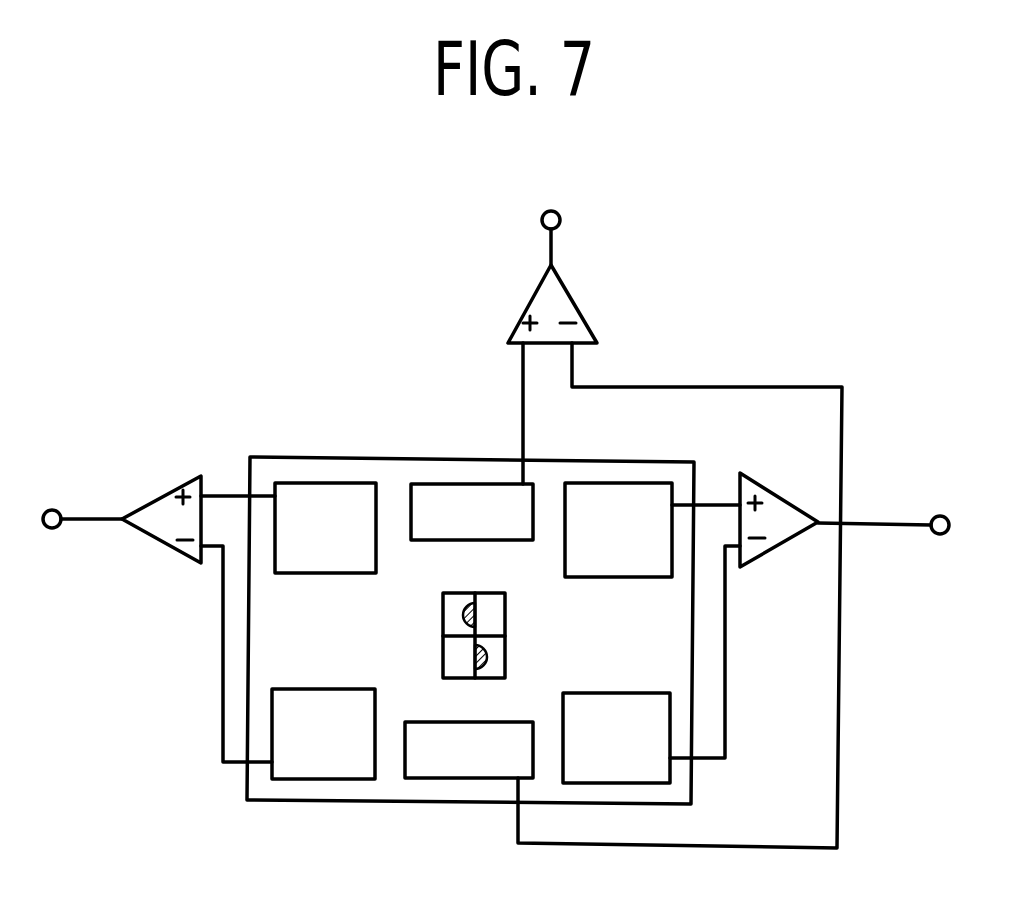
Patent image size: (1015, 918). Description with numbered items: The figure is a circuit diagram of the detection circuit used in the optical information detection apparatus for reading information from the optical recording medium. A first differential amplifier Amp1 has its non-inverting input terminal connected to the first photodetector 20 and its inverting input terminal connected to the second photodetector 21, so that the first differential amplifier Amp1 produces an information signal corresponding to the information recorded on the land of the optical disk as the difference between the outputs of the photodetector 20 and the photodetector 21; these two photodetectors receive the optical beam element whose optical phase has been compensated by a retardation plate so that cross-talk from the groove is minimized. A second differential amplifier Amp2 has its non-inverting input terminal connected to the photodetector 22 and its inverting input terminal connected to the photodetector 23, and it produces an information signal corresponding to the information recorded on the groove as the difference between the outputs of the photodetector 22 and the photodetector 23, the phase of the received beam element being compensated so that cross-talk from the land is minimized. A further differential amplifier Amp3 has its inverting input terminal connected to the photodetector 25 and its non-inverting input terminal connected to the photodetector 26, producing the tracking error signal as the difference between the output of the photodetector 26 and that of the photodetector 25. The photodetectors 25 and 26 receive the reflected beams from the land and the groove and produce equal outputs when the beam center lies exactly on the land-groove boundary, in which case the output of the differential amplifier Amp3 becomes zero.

The first photodetector 20 is at (333, 573).
The second photodetector 21 is at (286, 689).
The photodetector 22 is at (632, 577).
The photodetector 23 is at (581, 693).
The photodetector 25 is at (443, 778).
The photodetector 26 is at (448, 484).
The first differential amplifier Amp1 is at (148, 498).
The second differential amplifier Amp2 is at (780, 495).
The differential amplifier Amp3 is at (580, 313).